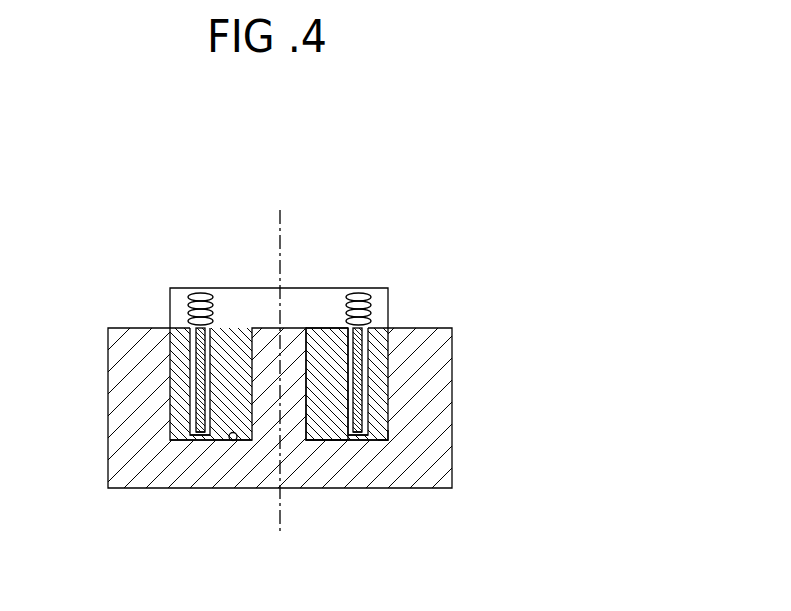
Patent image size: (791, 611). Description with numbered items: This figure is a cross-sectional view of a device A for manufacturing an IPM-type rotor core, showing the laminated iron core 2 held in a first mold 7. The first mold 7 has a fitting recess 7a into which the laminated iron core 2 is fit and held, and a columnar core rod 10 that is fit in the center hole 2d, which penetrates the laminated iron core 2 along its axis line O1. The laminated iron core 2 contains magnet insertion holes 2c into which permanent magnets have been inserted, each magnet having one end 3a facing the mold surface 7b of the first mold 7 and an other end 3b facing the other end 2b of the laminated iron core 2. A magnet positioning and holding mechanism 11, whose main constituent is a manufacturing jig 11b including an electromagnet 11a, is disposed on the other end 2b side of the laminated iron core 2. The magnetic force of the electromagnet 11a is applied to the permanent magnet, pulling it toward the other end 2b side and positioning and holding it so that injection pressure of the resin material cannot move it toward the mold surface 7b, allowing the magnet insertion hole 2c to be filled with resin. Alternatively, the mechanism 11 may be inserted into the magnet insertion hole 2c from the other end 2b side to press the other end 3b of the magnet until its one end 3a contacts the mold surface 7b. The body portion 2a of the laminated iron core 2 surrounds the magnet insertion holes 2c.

The device for manufacturing the rotor core A is at (571, 200).
The first mold 7 is at (462, 397).
The fitting recess 7a is at (395, 443).
The mold surface 7b is at (238, 439).
The axis line O1 is at (275, 357).
The laminated iron core 2 is at (178, 378).
The main body portion of movable member 2a is at (330, 441).
The other end 2b is at (320, 329).
The magnet insertion hole 2c is at (191, 333).
The center hole 2d is at (265, 438).
The core rod 10 is at (279, 502).
The one end 3a is at (201, 434).
The other end 3b is at (203, 330).
The magnet positioning and holding mechanism 11 is at (394, 273).
The electromagnet 11a is at (194, 332).
The manufacturing jig 11b is at (344, 293).